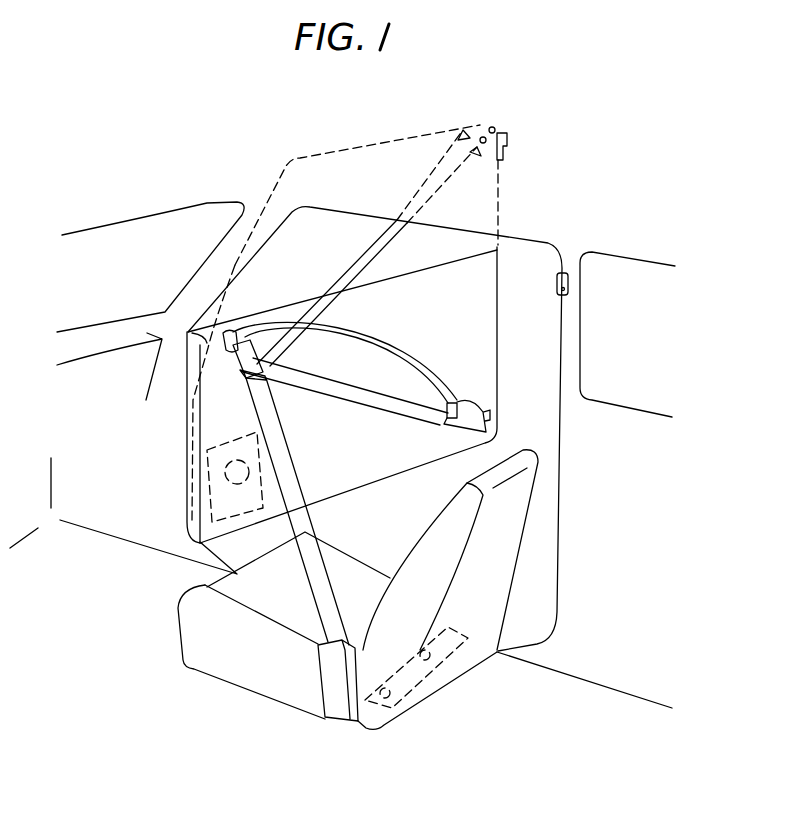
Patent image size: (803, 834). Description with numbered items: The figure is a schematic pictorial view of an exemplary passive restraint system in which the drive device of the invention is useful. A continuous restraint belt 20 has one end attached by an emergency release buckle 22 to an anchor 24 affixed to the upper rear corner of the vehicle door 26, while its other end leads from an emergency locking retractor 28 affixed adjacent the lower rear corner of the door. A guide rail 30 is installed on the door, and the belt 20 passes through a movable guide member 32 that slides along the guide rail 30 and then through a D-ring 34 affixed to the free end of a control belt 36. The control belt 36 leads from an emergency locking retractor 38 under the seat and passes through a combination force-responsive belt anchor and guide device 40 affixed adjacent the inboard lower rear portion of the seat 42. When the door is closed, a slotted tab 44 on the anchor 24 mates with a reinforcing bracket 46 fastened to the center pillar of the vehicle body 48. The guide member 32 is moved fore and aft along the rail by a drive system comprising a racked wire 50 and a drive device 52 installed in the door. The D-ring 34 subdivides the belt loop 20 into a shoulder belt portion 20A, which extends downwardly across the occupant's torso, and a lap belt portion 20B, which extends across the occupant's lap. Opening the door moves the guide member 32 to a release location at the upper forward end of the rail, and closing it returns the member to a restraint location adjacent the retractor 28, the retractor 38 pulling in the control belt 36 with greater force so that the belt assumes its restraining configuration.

The continuous restraint belt 20 is at (345, 341).
The shoulder belt portion 20A is at (338, 280).
The lap belt portion 20B is at (387, 397).
The emergency release buckle 22 is at (478, 138).
The anchor 24 is at (492, 126).
The vehicle door 26 is at (485, 350).
The emergency locking retractor 28 is at (488, 405).
The guide rail 30 is at (412, 352).
The movable guide member 32 is at (238, 330).
The D-ring 34 is at (267, 377).
The control belt 36 is at (283, 440).
The emergency locking retractor 38 is at (460, 663).
The combination force-responsive belt anchor and guide device 40 is at (338, 712).
The vehicle seat 42 is at (212, 663).
The slotted tab 44 is at (506, 146).
The reinforcing bracket 46 is at (569, 292).
The vehicle body 48 is at (98, 512).
The racked wire 50 is at (190, 412).
The drive device 52 is at (200, 492).